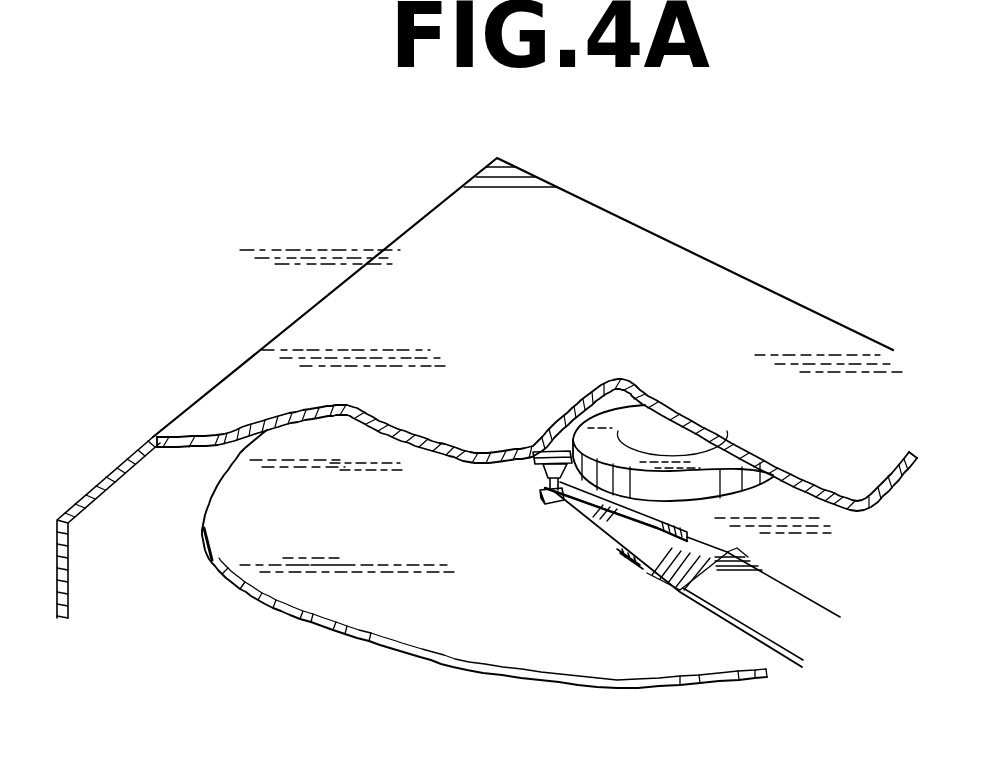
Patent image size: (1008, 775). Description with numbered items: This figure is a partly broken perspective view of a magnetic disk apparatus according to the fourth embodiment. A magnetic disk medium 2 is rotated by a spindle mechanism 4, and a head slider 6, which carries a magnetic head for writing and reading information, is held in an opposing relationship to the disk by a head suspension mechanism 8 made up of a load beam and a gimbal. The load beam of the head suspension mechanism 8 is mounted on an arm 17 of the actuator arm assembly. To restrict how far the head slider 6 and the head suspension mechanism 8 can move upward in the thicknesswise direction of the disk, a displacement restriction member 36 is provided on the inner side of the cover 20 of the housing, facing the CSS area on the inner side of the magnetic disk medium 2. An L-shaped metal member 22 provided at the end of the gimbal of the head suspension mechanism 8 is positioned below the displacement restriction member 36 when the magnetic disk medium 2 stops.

The magnetic disk medium 2 is at (347, 617).
The spindle mechanism 4 is at (687, 467).
The head slider 6 is at (547, 498).
The head suspension mechanism 8 is at (640, 552).
The arm 17 is at (797, 613).
The cover 20 is at (590, 215).
The L-shaped metal member 22 is at (537, 473).
The displacement restriction member 36 is at (540, 450).